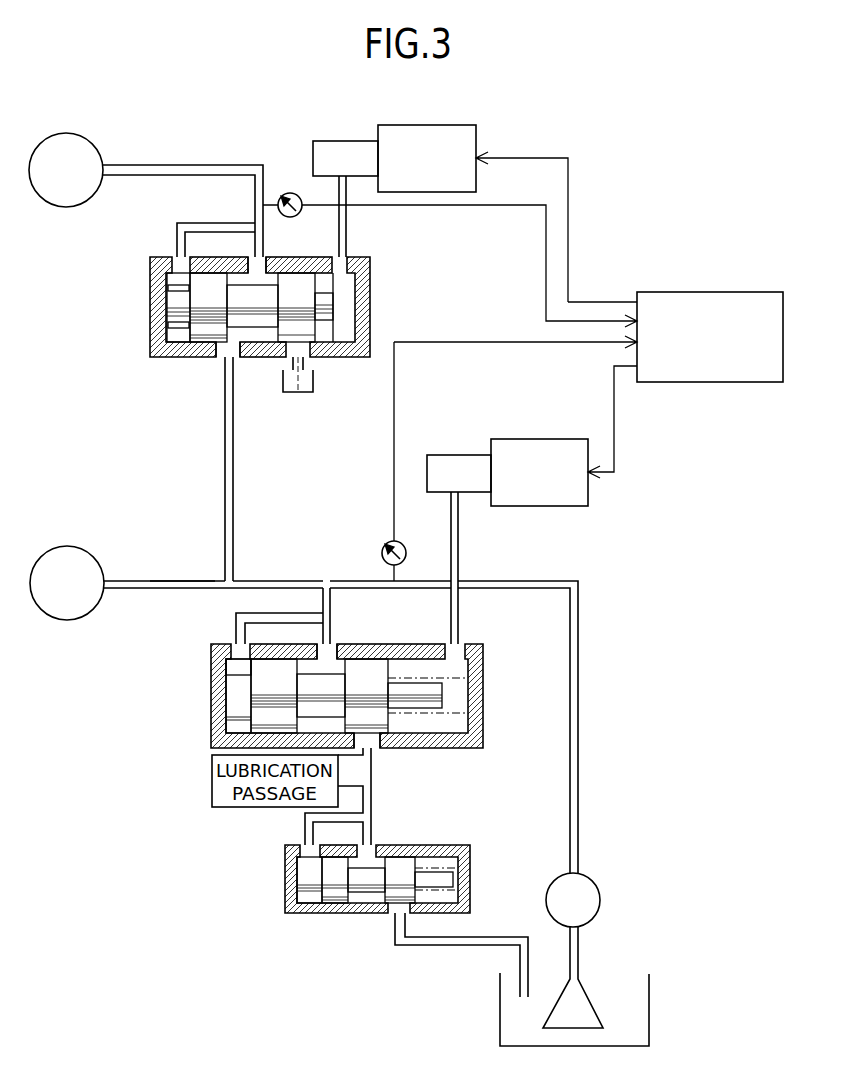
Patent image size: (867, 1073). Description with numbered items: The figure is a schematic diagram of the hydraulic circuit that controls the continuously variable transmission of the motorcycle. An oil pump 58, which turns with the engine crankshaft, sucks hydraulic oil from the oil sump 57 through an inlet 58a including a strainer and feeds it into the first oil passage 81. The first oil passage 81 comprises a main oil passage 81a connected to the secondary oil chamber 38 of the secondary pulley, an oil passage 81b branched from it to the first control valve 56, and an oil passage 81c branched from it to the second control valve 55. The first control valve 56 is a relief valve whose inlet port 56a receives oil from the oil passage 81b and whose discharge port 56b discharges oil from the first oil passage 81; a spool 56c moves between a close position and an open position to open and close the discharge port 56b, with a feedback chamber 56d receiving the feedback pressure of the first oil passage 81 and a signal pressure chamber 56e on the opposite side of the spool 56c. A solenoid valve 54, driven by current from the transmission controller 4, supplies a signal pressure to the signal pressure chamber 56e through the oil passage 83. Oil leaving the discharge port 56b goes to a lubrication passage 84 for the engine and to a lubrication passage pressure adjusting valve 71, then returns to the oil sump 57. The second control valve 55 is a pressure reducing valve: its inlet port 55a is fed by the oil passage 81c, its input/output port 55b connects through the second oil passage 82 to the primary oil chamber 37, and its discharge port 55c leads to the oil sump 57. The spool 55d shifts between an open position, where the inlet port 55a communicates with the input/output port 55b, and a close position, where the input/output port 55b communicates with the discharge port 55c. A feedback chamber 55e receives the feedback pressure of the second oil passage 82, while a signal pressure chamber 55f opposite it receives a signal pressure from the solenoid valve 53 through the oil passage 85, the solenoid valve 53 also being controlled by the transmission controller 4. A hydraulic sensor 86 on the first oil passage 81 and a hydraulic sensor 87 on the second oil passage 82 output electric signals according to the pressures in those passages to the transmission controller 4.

The transmission controller 4 is at (704, 292).
The primary oil chamber 37 is at (78, 137).
The secondary oil chamber 38 is at (83, 546).
The solenoid valve 53 is at (427, 125).
The solenoid valve 54 is at (576, 506).
The second control valve 55 is at (262, 315).
The inlet port 55a is at (221, 356).
The input/output port 55b is at (260, 262).
The discharge port 55c is at (306, 357).
The spool 55d is at (340, 302).
The feedback chamber 55e is at (172, 283).
The signal pressure chamber 55f is at (349, 280).
The first control valve 56 is at (350, 713).
The inlet port 56a is at (334, 654).
The discharge port 56b is at (372, 739).
The spool 56c is at (262, 691).
The feedback chamber 56d is at (237, 727).
The signal pressure chamber 56e is at (457, 725).
The oil sump 57 is at (650, 1000).
The oil pump 58 is at (592, 878).
The inlet 58a is at (593, 994).
The lubrication passage pressure adjusting valve 71 is at (471, 866).
The first oil passage 81 is at (323, 568).
The main oil passage 81a is at (278, 578).
The oil passage 81b is at (333, 600).
The oil passage 81c is at (234, 455).
The second oil passage 82 is at (181, 165).
The oil passage 83 is at (459, 537).
The lubrication oil passage 84 is at (372, 797).
The oil passage 85 is at (347, 216).
The hydraulic sensor 86 is at (404, 544).
The hydraulic sensor 87 is at (287, 192).